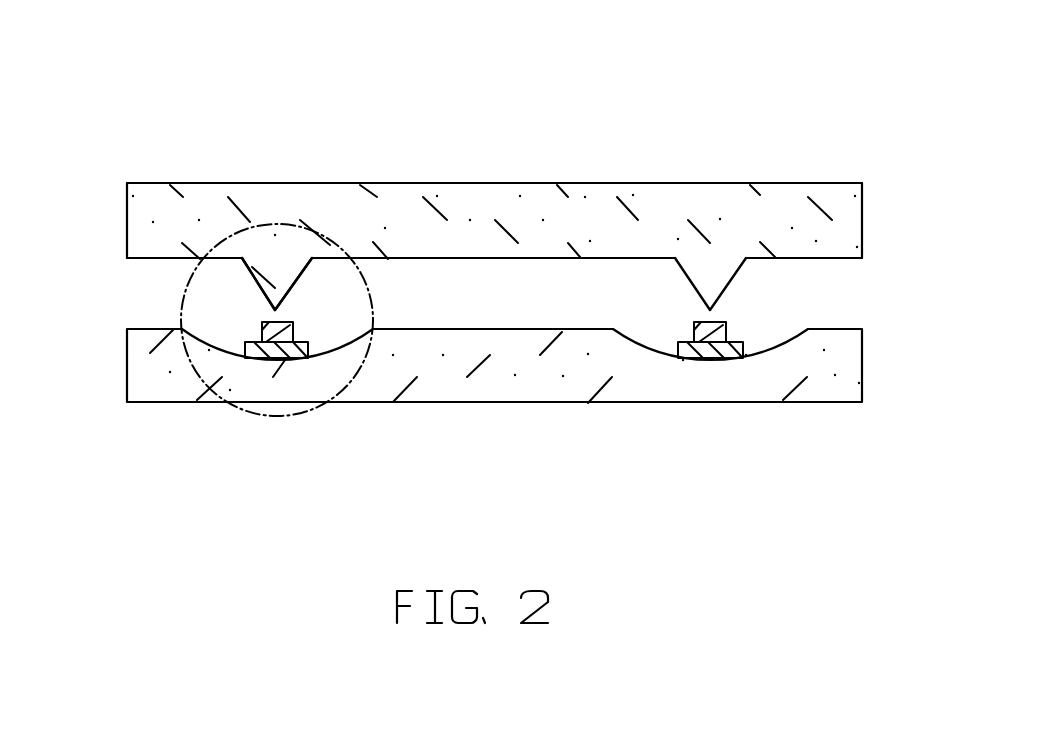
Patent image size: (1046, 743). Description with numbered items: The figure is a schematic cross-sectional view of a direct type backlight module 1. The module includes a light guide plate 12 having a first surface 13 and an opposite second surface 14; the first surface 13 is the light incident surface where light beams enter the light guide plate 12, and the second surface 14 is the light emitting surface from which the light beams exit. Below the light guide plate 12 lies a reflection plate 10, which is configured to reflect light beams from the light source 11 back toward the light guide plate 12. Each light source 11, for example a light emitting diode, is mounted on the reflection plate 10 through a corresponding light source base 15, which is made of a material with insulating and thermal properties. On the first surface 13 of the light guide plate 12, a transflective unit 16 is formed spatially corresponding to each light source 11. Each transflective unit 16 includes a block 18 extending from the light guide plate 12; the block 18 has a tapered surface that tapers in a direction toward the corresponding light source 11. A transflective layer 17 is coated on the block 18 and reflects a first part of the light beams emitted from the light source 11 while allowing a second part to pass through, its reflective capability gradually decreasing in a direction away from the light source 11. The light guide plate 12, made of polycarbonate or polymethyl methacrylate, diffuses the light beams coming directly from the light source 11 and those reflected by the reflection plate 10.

The direct type backlight module 1 is at (542, 45).
The reflection plate 10 is at (823, 359).
The light source 11 is at (692, 345).
The light guide plate 12 is at (827, 231).
The first surface 13 is at (844, 261).
The second surface 14 is at (852, 183).
The light source base 15 is at (713, 352).
The transflective unit 16 is at (138, 125).
The transflective layer 17 is at (265, 297).
The block 18 is at (273, 270).